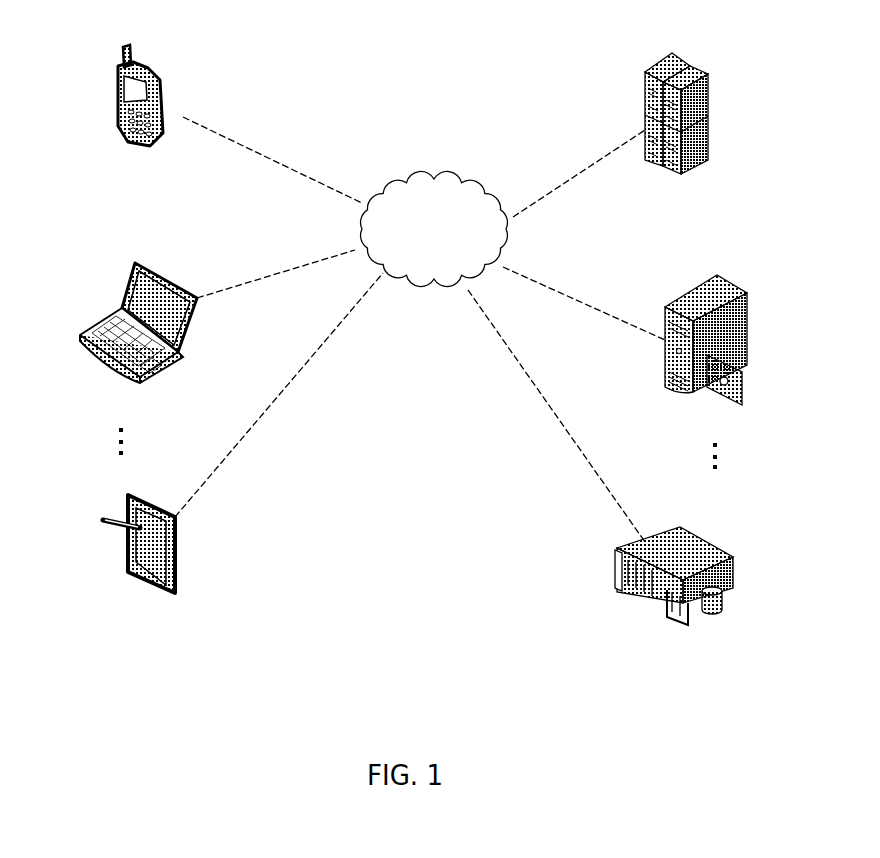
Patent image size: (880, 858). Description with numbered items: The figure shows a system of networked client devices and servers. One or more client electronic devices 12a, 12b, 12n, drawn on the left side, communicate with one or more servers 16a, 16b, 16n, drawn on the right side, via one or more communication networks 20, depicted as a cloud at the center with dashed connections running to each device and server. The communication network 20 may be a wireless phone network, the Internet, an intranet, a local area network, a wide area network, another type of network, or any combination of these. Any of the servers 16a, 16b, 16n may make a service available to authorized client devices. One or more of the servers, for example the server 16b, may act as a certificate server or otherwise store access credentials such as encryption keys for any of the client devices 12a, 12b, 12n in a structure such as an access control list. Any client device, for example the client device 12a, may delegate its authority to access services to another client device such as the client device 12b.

The client electronic device 12a is at (112, 92).
The client electronic device 12b is at (125, 280).
The client electronic device 12n is at (127, 568).
The server 16a is at (700, 65).
The server 16b is at (738, 285).
The server 16n is at (735, 577).
The communication network 20 is at (435, 173).